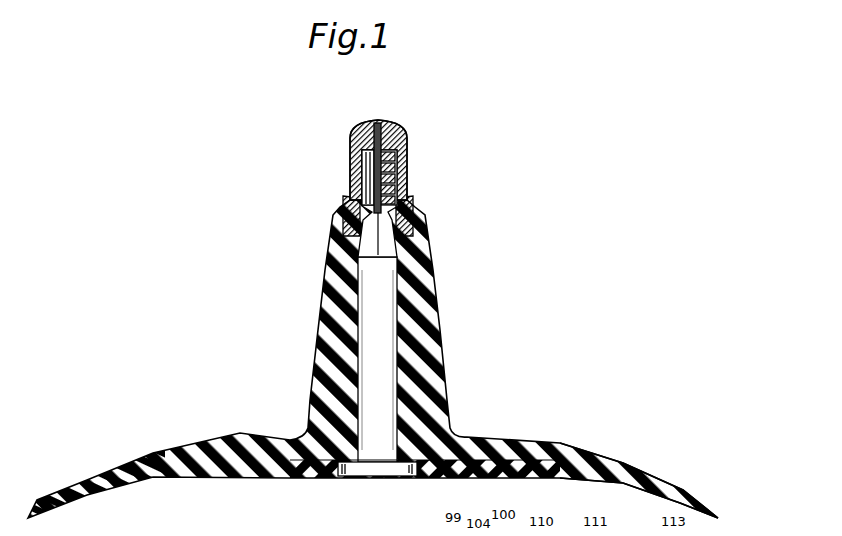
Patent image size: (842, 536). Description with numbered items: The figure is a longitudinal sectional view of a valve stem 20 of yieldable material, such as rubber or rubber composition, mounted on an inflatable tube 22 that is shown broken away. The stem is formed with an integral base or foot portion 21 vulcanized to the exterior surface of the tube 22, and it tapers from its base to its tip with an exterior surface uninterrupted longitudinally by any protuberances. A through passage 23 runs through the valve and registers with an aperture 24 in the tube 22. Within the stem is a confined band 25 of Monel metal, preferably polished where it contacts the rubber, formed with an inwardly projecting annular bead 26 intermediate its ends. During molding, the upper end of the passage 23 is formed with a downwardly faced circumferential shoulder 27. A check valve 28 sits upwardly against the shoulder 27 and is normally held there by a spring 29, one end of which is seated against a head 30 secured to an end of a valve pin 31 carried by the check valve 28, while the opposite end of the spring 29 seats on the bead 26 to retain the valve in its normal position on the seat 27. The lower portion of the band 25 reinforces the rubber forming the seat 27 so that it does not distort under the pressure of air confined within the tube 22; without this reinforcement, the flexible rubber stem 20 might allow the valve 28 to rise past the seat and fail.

The valve stem 20 is at (424, 329).
The base or foot portion 21 is at (494, 445).
The tube 22 is at (651, 477).
The through passage 23 is at (377, 424).
The aperture 24 is at (355, 470).
The confined band 25 is at (404, 165).
The annular bead 26 is at (413, 213).
The circumferential shoulder 27 is at (410, 246).
The check valve 28 is at (323, 257).
The spring 29 is at (350, 170).
The head 30 is at (390, 124).
The valve pin 31 is at (377, 122).